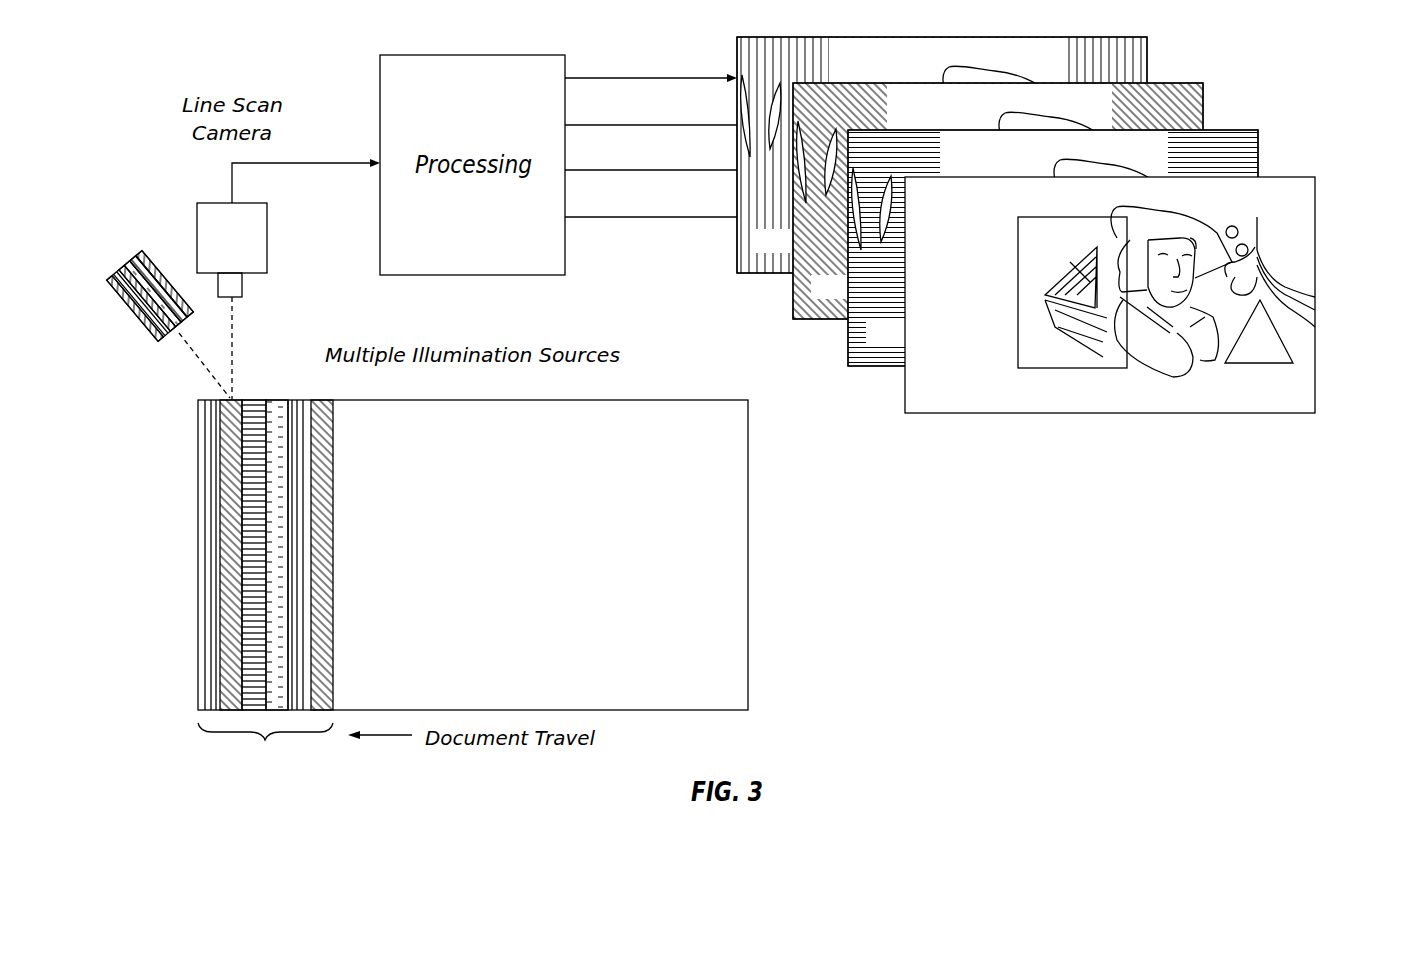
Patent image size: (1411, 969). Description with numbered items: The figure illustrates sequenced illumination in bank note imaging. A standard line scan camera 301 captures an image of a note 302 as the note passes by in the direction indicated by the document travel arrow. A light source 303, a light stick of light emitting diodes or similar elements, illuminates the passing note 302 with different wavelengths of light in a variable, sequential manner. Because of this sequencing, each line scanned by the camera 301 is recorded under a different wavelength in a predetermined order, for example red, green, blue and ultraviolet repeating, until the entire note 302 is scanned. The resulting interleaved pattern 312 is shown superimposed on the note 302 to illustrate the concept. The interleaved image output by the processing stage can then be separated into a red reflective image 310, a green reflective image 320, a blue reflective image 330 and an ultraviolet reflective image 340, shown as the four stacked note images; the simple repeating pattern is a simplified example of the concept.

The line scan camera 301 is at (197, 240).
The note 302 is at (559, 571).
The light source 303 is at (128, 308).
The interleaved pattern 312 is at (265, 740).
The red reflective image 310 is at (1147, 57).
The green reflective image 320 is at (1203, 103).
The blue reflective image 330 is at (1258, 150).
The ultraviolet reflective image 340 is at (1315, 212).